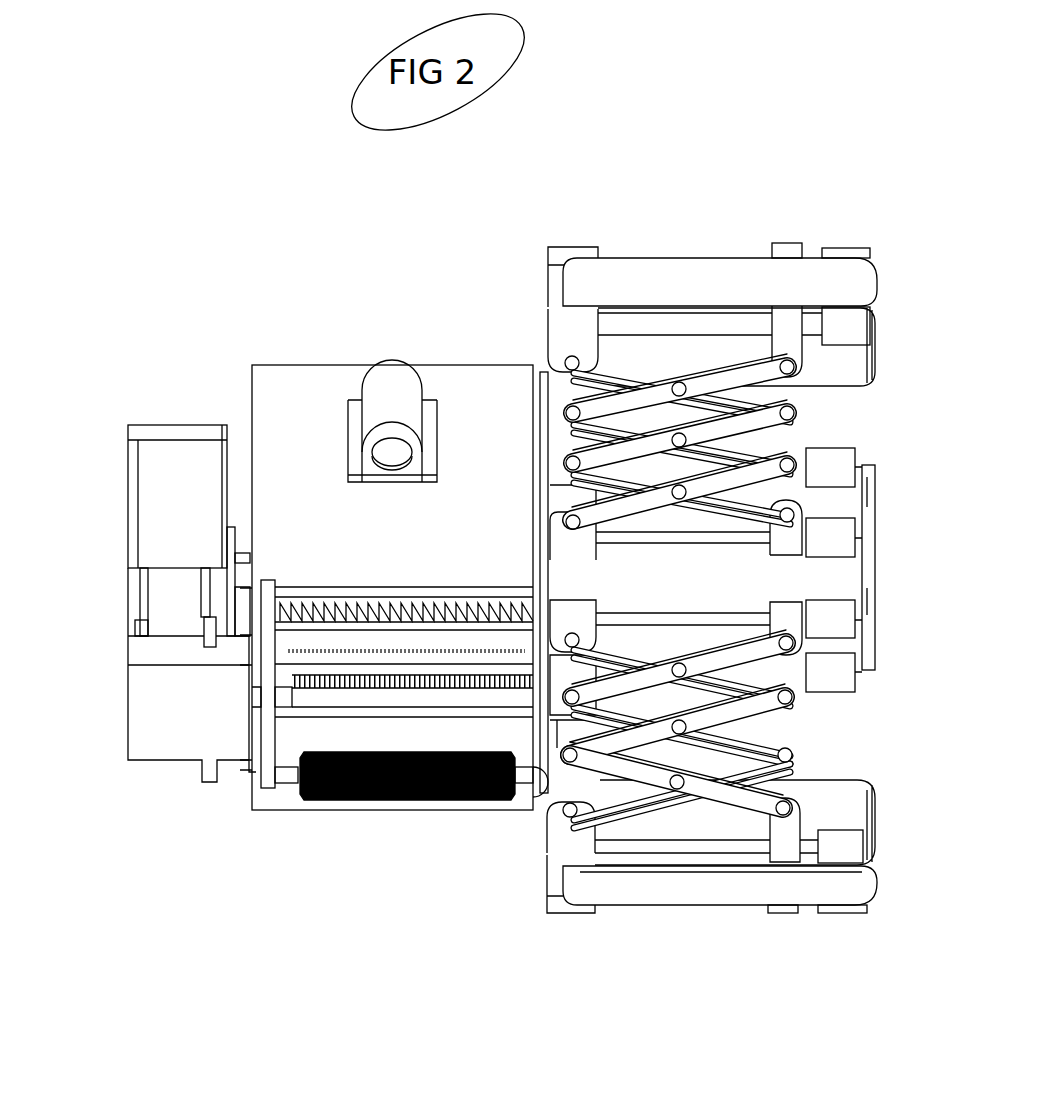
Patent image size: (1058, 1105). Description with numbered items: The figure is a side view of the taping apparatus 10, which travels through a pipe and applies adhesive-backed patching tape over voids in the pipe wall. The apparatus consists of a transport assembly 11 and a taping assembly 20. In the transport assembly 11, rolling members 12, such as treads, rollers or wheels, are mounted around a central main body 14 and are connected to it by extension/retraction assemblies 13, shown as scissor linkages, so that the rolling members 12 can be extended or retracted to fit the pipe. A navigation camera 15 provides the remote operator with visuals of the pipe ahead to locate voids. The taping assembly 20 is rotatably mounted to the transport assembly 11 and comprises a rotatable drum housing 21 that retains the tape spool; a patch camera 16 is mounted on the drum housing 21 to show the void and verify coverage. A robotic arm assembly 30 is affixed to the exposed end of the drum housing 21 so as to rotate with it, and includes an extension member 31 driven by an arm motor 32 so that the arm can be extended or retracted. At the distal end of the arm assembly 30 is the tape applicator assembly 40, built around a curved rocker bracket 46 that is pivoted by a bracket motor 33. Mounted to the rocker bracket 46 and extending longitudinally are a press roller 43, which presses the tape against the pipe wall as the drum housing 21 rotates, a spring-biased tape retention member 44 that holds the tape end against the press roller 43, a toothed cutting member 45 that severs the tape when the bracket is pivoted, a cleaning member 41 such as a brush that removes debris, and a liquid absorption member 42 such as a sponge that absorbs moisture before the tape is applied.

The taping apparatus 10 is at (703, 100).
The transport assembly 11 is at (720, 975).
The rolling members 12 is at (740, 266).
The extension/retraction assemblies 13 is at (795, 424).
The main body 14 is at (830, 576).
The navigation camera 15 is at (535, 792).
The patch camera 16 is at (396, 380).
The taping assembly 20 is at (203, 365).
The drum housing 21 is at (276, 366).
The robotic arm assembly 30 is at (155, 810).
The extension member 31 is at (175, 600).
The arm motor 32 is at (150, 505).
The bracket motor 33 is at (140, 715).
The tape applicator assembly 40 is at (372, 850).
The cleaning member 41 is at (471, 808).
The liquid absorption member 42 is at (300, 725).
The press roller 43 is at (302, 648).
The tape retention member 44 is at (378, 684).
The cutting member 45 is at (455, 608).
The rocker bracket 46 is at (267, 592).